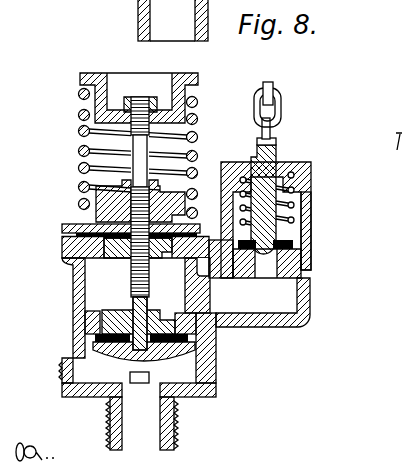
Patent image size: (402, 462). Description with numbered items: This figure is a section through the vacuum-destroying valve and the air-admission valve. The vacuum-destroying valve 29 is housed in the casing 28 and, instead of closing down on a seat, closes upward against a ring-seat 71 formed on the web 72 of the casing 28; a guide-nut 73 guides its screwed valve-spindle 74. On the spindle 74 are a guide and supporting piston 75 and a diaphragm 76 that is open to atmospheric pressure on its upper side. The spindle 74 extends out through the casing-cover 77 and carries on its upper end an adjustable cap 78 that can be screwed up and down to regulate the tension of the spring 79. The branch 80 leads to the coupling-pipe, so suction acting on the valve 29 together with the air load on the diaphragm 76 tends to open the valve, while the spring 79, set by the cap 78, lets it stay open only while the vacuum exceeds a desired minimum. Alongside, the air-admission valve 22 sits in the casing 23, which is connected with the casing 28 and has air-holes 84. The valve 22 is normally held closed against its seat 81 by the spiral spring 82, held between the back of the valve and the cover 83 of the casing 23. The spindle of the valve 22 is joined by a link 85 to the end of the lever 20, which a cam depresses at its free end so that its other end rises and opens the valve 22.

The lever 20 is at (270, 85).
The air-admission valve 22 is at (294, 244).
The air-admission-valve casing 23 is at (313, 205).
The casing of vacuum-destroying valve 28 is at (77, 302).
The vacuum-destroying valve 29 is at (115, 353).
The ring-seat 71 is at (205, 343).
The web 72 is at (190, 313).
The guide-nut 73 is at (157, 328).
The valve-spindle 74 is at (133, 286).
The guide and supporting piston 75 is at (114, 252).
The diaphragm 76 is at (82, 223).
The casing-cover 77 is at (95, 200).
The adjustable cap 78 is at (97, 80).
The spring 79 is at (80, 146).
The branch 80 is at (142, 423).
The seat 81 is at (301, 253).
The spiral spring 82 is at (301, 197).
The cover 83 is at (280, 178).
The air-holes 84 is at (311, 227).
The link 85 is at (281, 109).